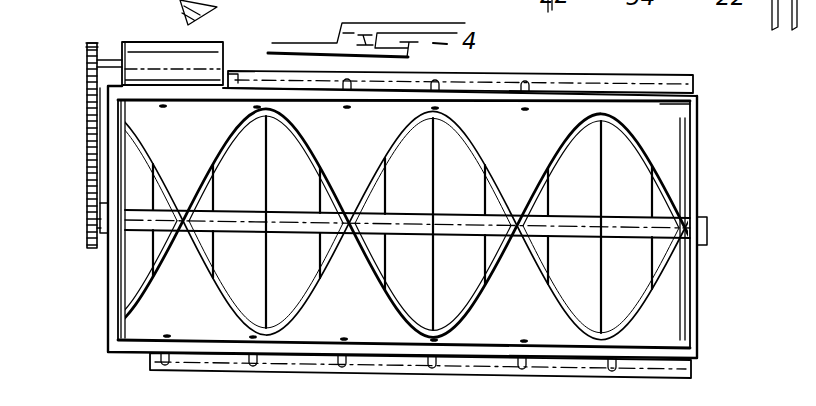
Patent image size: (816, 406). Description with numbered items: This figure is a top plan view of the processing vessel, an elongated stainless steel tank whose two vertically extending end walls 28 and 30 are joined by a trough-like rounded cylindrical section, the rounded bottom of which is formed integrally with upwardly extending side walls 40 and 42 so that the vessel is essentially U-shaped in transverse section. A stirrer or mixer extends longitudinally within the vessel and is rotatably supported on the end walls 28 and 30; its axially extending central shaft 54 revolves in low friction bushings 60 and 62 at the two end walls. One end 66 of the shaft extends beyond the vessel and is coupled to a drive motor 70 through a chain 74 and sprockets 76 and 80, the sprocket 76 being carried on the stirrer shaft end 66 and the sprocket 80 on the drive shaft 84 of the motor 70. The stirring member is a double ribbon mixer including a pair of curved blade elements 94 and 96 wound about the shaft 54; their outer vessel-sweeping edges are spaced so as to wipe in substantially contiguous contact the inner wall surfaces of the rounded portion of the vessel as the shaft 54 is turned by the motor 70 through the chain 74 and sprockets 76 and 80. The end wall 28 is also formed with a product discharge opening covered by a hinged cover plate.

The end wall 28 is at (108, 280).
The end wall 30 is at (693, 153).
The side wall 40 is at (137, 347).
The side wall 42 is at (647, 100).
The central shaft 54 is at (577, 226).
The low friction bushing 60 is at (107, 236).
The low friction bushing 62 is at (703, 247).
The shaft end 66 is at (100, 190).
The drive motor 70 is at (195, 52).
The chain 74 is at (90, 110).
The sprocket 76 is at (87, 225).
The sprocket 80 is at (88, 55).
The drive shaft 84 is at (110, 62).
The curved blade element 94 is at (415, 225).
The curved blade element 96 is at (415, 223).